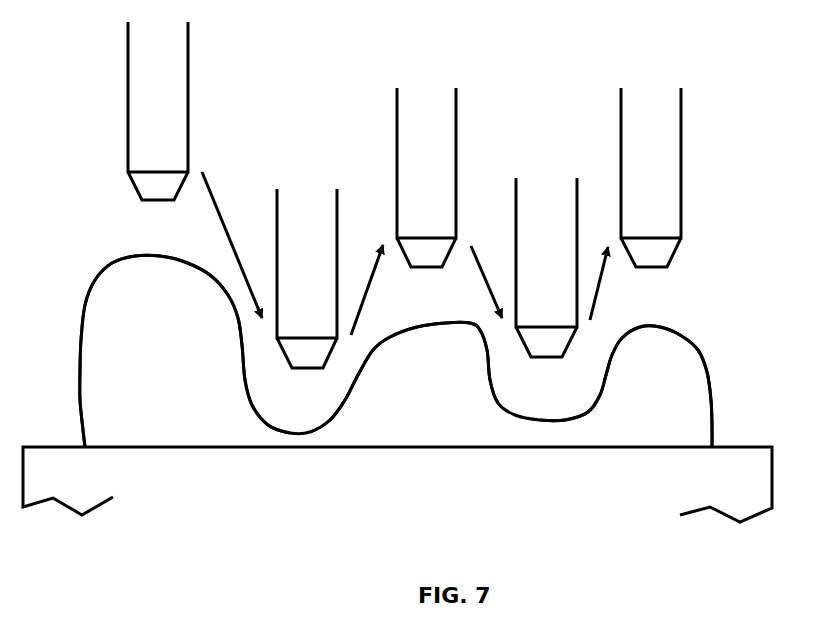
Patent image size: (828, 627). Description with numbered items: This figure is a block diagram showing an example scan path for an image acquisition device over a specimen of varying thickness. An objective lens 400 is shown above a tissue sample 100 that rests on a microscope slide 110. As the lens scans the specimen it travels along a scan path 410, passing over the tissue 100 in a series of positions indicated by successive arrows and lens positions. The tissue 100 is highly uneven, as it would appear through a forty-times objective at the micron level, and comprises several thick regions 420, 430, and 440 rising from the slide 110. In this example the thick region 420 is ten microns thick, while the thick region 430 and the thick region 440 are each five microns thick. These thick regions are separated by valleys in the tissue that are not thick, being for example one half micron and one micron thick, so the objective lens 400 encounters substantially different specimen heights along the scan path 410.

The objective lens 400 is at (157, 96).
The scan path 410 is at (217, 197).
The tissue sample 100 is at (437, 351).
The microscope slide 110 is at (712, 473).
The thick region 420 is at (143, 350).
The thick region 430 is at (452, 380).
The thick region 440 is at (650, 395).